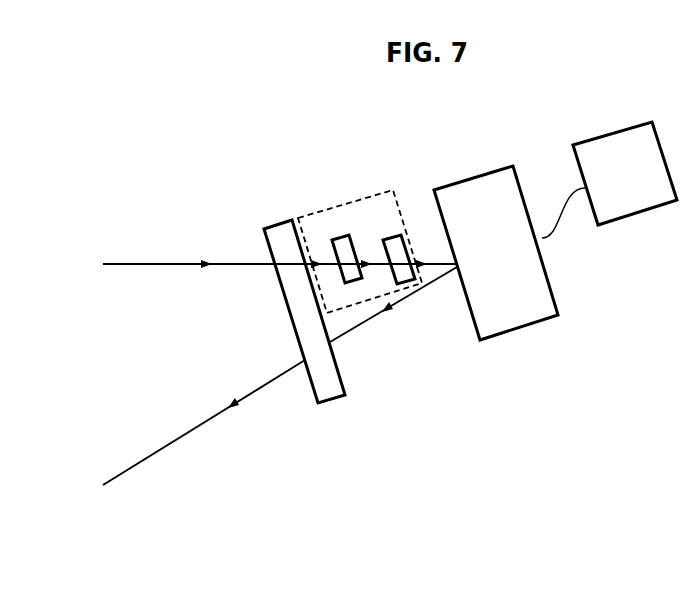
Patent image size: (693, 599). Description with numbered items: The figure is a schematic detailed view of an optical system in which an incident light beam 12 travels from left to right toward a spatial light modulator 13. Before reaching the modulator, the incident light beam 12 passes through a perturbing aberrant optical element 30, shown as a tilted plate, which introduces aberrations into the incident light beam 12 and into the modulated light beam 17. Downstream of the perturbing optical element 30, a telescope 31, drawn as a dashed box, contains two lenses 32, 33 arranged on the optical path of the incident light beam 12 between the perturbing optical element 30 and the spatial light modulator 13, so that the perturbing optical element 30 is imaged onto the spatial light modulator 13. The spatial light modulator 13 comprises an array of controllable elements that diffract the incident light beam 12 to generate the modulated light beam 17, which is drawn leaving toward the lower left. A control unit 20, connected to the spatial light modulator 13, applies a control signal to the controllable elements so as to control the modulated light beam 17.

The incident light beam 12 is at (232, 262).
The spatial light modulator 13 is at (515, 310).
The modulated light beam 17 is at (185, 435).
The control unit 20 is at (633, 200).
The perturbing aberrant optical element 30 is at (330, 388).
The telescope 31 is at (328, 207).
The lens 32 is at (352, 272).
The lens 33 is at (402, 272).